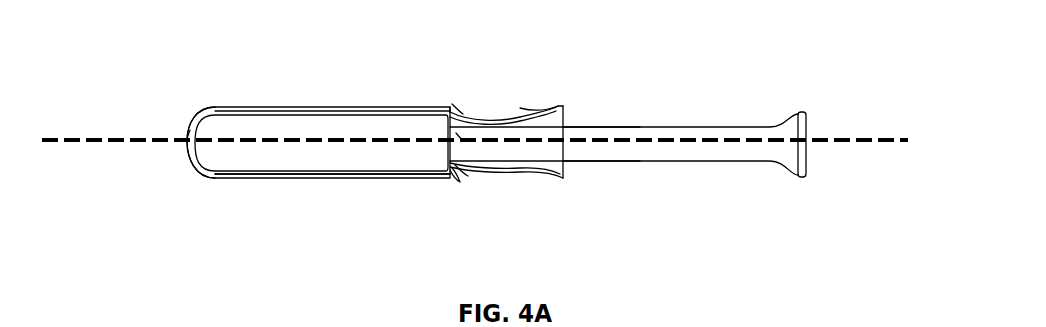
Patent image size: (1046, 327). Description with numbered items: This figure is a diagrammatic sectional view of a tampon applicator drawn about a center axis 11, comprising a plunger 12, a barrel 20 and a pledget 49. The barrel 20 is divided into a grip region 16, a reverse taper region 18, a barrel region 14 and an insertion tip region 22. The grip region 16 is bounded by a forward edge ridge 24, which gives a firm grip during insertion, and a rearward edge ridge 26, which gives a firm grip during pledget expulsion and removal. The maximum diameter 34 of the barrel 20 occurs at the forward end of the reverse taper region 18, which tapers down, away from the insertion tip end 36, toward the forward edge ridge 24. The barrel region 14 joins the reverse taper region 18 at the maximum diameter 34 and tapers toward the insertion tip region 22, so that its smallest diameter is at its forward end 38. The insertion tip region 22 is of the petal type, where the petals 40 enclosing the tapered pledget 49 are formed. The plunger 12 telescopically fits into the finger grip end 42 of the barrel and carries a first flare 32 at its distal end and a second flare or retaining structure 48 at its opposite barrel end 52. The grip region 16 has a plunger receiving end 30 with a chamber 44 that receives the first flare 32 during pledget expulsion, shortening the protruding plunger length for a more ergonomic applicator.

The center axis 11 is at (847, 133).
The plunger 12 is at (633, 135).
The barrel region 14 is at (322, 177).
The grip region 16 is at (500, 118).
The reverse taper region 18 is at (451, 176).
The barrel 20 is at (308, 107).
The insertion tip region 22 is at (206, 113).
The forward edge ridge 24 is at (461, 109).
The rearward edge ridge 26 is at (563, 178).
The plunger receiving end 30 is at (580, 124).
The first flare 32 is at (808, 112).
The maximum diameter 34 is at (395, 107).
The insertion tip end 36 is at (184, 120).
The forward end of barrel region 38 is at (283, 177).
The petals 40 is at (187, 153).
The finger grip end 42 is at (527, 107).
The chamber 44 is at (583, 167).
The retaining structure 48 is at (459, 180).
The pledget 49 is at (350, 150).
The barrel end of plunger 52 is at (460, 138).